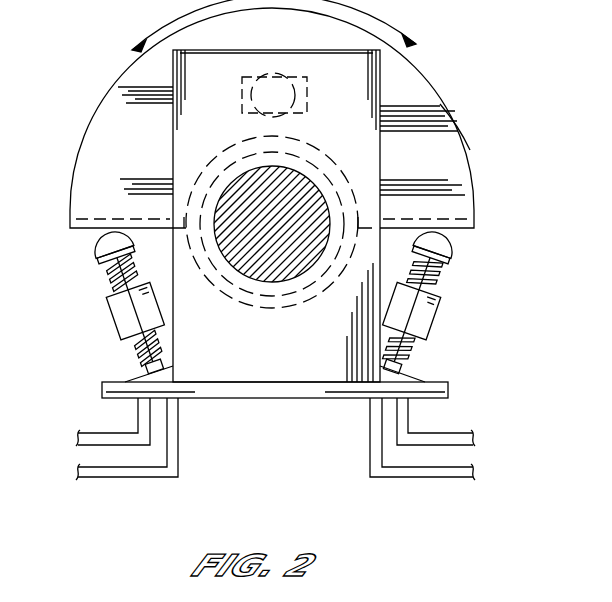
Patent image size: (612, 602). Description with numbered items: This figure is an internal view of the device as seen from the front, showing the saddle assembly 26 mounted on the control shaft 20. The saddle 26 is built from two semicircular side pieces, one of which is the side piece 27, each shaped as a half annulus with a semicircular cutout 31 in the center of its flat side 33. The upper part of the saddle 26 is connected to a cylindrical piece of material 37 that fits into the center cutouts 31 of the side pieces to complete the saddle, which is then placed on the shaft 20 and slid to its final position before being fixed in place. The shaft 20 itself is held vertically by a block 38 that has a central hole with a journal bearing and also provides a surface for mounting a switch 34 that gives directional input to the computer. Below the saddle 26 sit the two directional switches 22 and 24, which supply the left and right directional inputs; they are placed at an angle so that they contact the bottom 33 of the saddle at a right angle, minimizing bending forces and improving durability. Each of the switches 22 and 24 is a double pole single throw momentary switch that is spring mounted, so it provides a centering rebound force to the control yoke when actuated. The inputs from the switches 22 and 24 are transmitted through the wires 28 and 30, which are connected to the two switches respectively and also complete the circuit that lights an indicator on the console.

The control shaft 20 is at (243, 262).
The directional switch 22 is at (433, 316).
The directional switch 24 is at (109, 317).
The saddle assembly 26 is at (473, 140).
The side piece 27 is at (110, 122).
The wire 28 is at (445, 439).
The wire 30 is at (107, 439).
The semicircular cutout 31 is at (242, 176).
The flat side 33 is at (465, 236).
The switch 34 is at (270, 93).
The cylindrical piece 37 is at (303, 298).
The block 38 is at (383, 150).